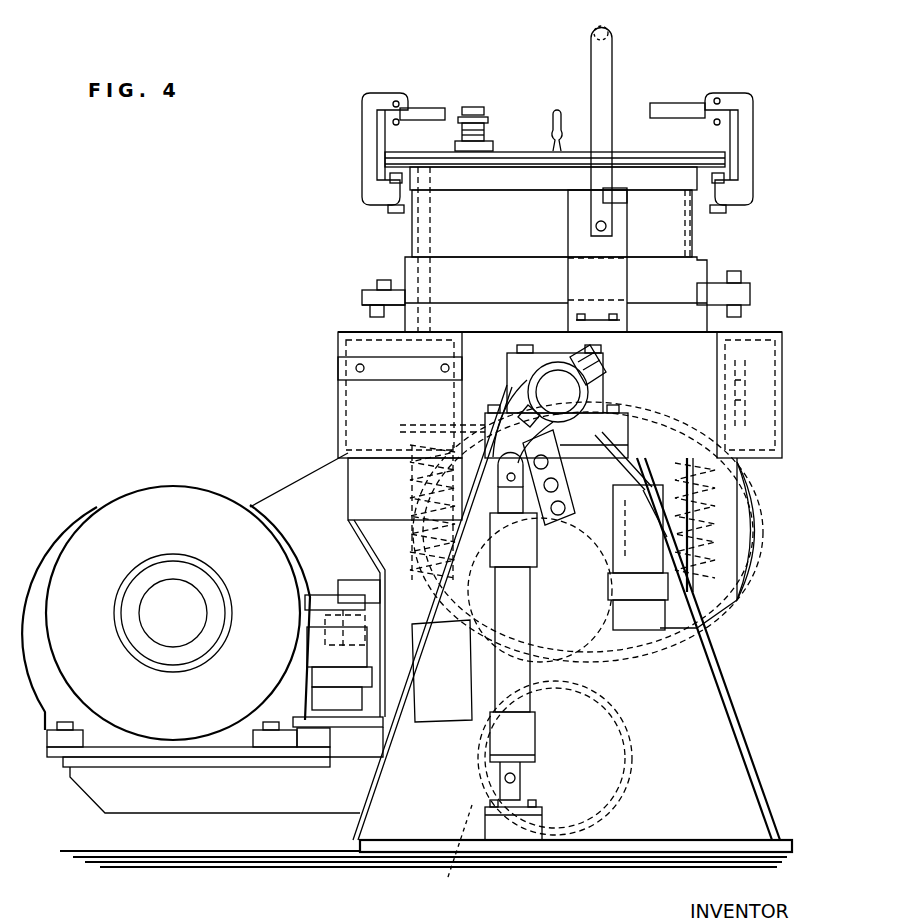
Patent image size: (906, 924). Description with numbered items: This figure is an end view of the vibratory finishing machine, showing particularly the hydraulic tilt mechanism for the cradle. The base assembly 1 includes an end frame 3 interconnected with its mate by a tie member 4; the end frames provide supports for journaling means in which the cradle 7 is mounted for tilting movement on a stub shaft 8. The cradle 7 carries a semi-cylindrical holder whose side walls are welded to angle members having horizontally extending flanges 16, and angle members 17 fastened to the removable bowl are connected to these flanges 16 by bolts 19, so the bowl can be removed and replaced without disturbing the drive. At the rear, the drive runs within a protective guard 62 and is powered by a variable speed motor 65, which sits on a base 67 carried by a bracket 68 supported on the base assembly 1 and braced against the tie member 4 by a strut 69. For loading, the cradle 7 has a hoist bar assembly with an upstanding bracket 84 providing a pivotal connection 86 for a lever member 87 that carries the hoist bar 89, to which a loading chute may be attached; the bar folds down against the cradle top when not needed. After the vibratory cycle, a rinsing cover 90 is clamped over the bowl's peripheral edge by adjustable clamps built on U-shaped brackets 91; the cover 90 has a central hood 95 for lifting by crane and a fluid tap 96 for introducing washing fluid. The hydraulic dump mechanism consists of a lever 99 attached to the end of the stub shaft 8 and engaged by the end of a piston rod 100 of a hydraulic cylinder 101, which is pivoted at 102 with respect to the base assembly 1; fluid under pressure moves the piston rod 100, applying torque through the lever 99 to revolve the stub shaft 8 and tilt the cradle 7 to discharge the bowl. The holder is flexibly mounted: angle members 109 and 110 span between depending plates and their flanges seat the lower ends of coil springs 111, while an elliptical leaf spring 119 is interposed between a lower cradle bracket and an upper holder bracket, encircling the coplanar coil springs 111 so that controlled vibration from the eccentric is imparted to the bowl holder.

The base assembly 1 is at (637, 846).
The end frame 3 is at (718, 697).
The tie member 4 is at (626, 730).
The cradle 7 is at (338, 370).
The stub shaft 8 is at (574, 386).
The horizontally extending flanges 16 is at (363, 306).
The angle members 17 is at (363, 293).
The bolts 19 is at (378, 279).
The protective guard 62 is at (312, 480).
The variable speed motor 65 is at (172, 488).
The base 67 is at (223, 760).
The bracket 68 is at (288, 813).
The strut 69 is at (456, 853).
The upstanding bracket 84 is at (620, 256).
The pivotal connection 86 is at (597, 229).
The lever member 87 is at (612, 122).
The hoist bar 89 is at (612, 33).
The rinsing cover 90 is at (512, 152).
The U-shaped bracket 91 is at (366, 148).
The central hood 95 is at (563, 112).
The fluid tap 96 is at (470, 120).
The lever 99 is at (508, 424).
The piston rod 100 is at (560, 472).
The hydraulic cylinder 101 is at (530, 586).
The pivot 102 is at (525, 795).
The angle member 109 is at (442, 671).
The angle member 110 is at (715, 603).
The coil springs 111 is at (358, 506).
The elliptical leaf spring 119 is at (368, 565).